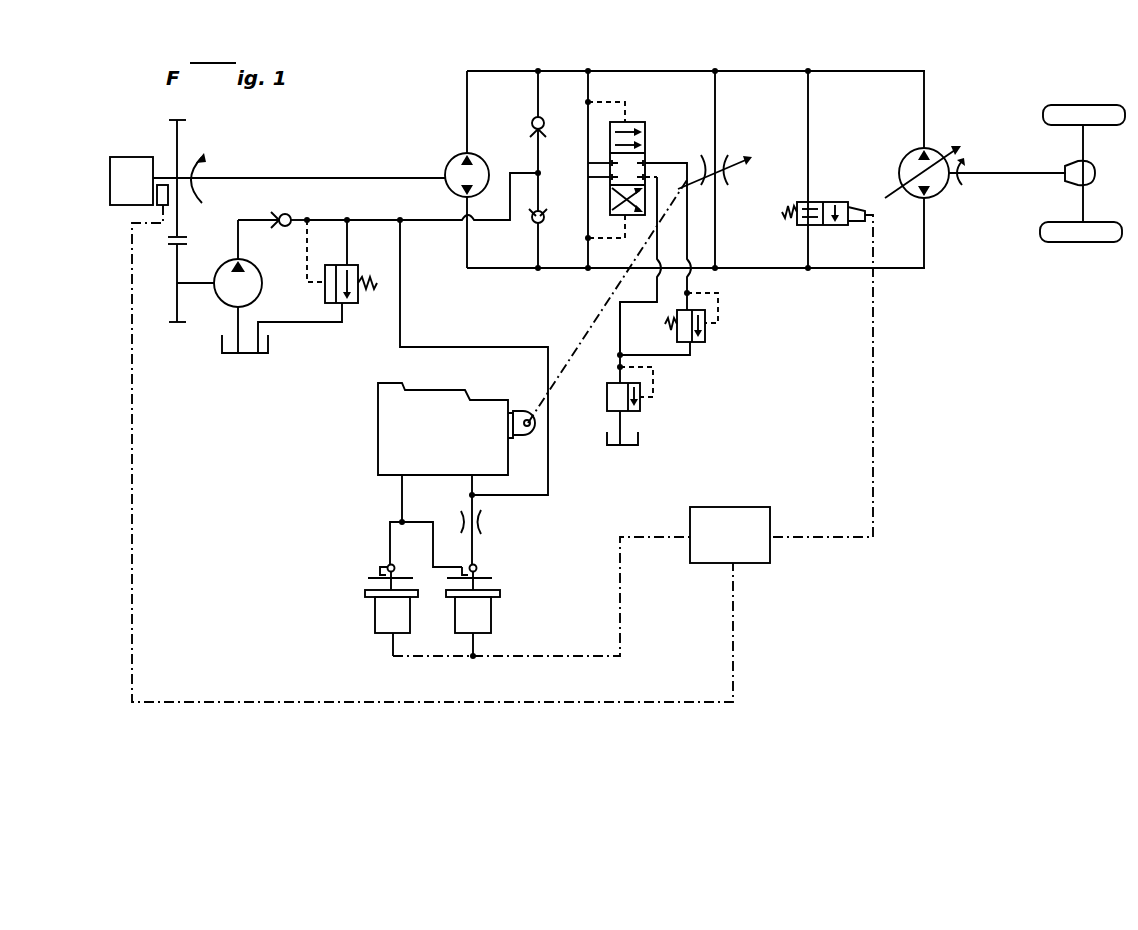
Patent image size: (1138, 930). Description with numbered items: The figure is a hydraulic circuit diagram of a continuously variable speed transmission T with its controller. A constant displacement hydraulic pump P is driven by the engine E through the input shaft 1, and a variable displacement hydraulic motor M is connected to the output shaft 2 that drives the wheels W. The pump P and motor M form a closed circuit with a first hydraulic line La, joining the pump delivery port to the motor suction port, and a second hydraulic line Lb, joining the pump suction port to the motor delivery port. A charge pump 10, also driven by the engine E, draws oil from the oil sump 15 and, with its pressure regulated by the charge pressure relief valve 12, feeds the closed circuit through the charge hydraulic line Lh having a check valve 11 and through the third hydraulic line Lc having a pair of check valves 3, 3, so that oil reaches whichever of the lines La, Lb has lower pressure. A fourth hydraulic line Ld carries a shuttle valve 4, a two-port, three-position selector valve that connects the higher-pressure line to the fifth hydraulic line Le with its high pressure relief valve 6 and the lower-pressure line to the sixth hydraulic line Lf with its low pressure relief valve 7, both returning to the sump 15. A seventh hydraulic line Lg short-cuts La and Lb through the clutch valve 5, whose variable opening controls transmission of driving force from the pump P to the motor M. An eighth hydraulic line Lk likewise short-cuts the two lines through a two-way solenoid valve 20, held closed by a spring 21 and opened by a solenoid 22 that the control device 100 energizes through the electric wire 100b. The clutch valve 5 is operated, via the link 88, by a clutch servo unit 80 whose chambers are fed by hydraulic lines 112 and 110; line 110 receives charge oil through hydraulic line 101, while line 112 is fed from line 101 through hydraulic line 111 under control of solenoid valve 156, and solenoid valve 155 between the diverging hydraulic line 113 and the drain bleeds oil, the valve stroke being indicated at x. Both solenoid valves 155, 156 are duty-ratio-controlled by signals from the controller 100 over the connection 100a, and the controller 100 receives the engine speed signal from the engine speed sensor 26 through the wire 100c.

The input shaft 1 is at (360, 178).
The output shaft 2 is at (1032, 173).
The check valves 3 is at (529, 118).
The shuttle valve 4 is at (645, 122).
The clutch valve 5 is at (735, 178).
The high pressure relief valve 6 is at (705, 338).
The low pressure relief valve 7 is at (640, 405).
The charge pump 10 is at (262, 283).
The check valve 11 is at (283, 230).
The charge pressure relief valve 12 is at (352, 265).
The oil sump 15 is at (270, 348).
The two-way solenoid valve 20 is at (836, 202).
The spring 21 is at (785, 220).
The solenoid 22 is at (859, 227).
The engine speed sensor 26 is at (160, 185).
The clutch servo unit 80 is at (362, 426).
The link 88 is at (606, 297).
The control device 100 is at (757, 507).
The signal line 100a is at (621, 630).
The electric wire 100b is at (874, 396).
The wire 100c is at (525, 703).
The hydraulic line 101 is at (401, 318).
The hydraulic line 110 is at (476, 488).
The hydraulic line 111 is at (483, 534).
The hydraulic line 112 is at (433, 510).
The hydraulic line 113 is at (390, 537).
The solenoid valve 155 is at (375, 616).
The solenoid valve 156 is at (491, 612).
The engine E is at (110, 179).
The hydraulic pump P is at (449, 157).
The hydraulic motor M is at (949, 152).
The hydraulic transmission T is at (896, 53).
The wheels W is at (1097, 96).
The first hydraulic line La is at (502, 268).
The second hydraulic line Lb is at (512, 71).
The third hydraulic line Lc is at (540, 160).
The fourth hydraulic line Ld is at (590, 92).
The fifth hydraulic line Le is at (671, 162).
The sixth hydraulic line Lf is at (622, 318).
The seventh hydraulic line Lg is at (718, 102).
The charge hydraulic line Lh is at (428, 220).
The eighth hydraulic line Lk is at (810, 118).
The valve stroke x is at (372, 567).